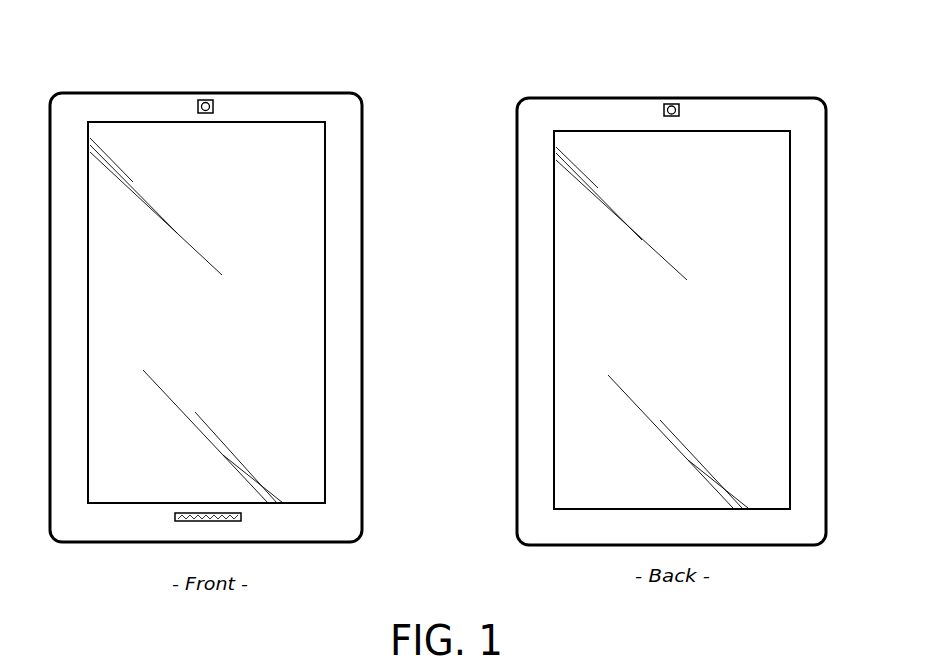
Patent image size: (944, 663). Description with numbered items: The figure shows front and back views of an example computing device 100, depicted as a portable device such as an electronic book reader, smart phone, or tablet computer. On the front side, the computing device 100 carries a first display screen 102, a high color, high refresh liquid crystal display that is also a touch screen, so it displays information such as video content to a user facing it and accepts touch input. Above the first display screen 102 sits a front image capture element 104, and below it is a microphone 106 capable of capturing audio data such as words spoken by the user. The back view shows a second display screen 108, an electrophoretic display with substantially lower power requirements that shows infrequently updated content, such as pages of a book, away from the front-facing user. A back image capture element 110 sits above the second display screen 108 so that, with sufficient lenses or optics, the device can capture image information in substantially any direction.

The computing device 100 is at (815, 72).
The first display screen 102 is at (325, 242).
The front image capture element 104 is at (213, 107).
The microphone 106 is at (175, 517).
The second display screen 108 is at (554, 250).
The back image capture element 110 is at (672, 104).